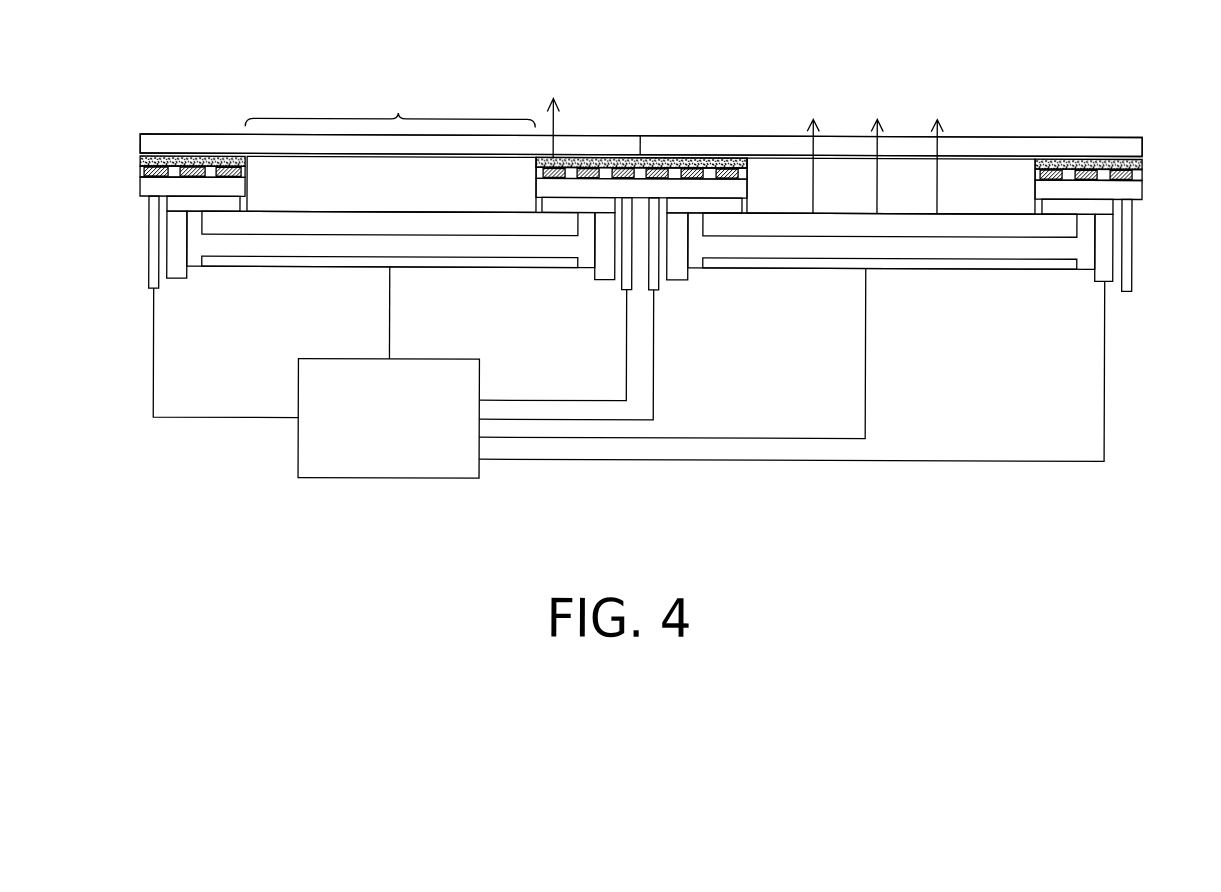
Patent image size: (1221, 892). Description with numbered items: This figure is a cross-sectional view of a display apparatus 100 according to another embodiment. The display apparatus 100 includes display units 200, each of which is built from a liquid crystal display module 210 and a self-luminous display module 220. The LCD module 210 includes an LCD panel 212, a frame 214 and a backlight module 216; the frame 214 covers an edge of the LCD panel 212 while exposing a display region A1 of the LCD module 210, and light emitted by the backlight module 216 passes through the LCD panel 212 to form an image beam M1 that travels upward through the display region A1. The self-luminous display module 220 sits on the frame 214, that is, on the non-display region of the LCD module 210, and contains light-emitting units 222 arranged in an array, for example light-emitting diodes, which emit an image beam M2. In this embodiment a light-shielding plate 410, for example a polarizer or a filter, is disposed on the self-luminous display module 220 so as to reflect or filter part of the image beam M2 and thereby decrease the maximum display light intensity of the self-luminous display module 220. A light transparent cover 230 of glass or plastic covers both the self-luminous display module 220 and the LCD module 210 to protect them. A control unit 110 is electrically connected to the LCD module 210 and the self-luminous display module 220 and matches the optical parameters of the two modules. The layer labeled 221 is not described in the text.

The display apparatus 100 is at (665, 286).
The control unit 110 is at (297, 460).
The display unit 200 is at (353, 99).
The liquid crystal display module 210 is at (640, 356).
The LCD panel 212 is at (948, 225).
The frame 214 is at (722, 203).
The backlight module 216 is at (1033, 256).
The self-luminous display module 220 is at (1132, 189).
The piezoelectric layer 221 is at (1093, 145).
The light-emitting units 222 is at (155, 157).
The light transparent cover 230 is at (1132, 144).
The light-shielding plate 410 is at (606, 156).
The image beam M1 is at (943, 133).
The image beam M2 is at (555, 125).
The display region A1 is at (390, 102).